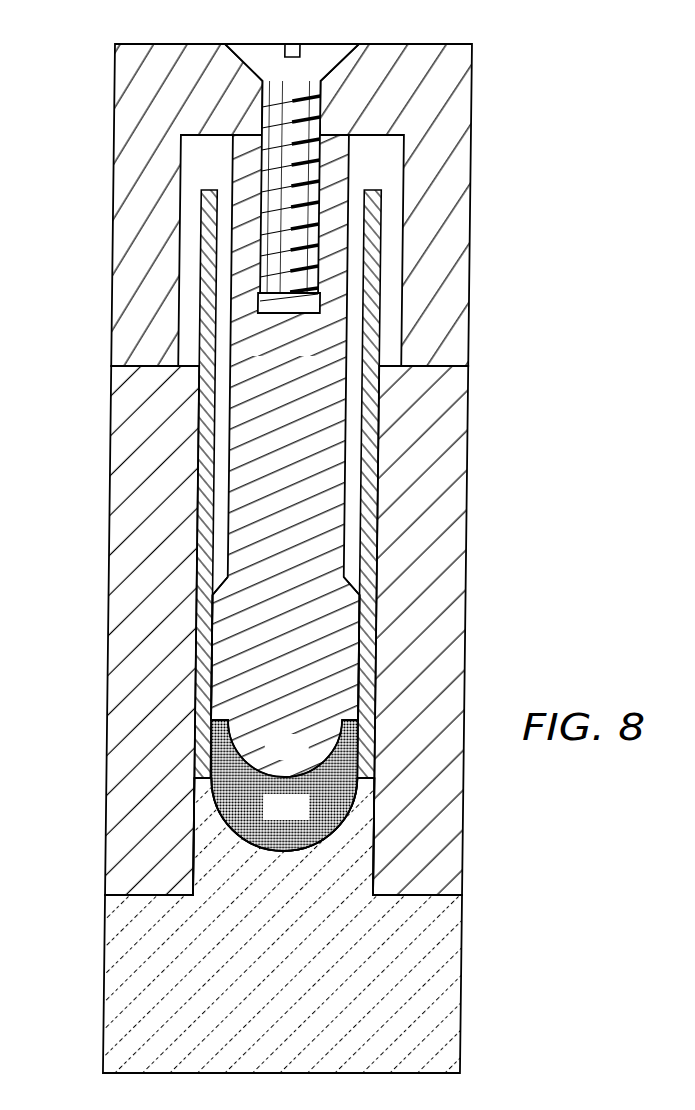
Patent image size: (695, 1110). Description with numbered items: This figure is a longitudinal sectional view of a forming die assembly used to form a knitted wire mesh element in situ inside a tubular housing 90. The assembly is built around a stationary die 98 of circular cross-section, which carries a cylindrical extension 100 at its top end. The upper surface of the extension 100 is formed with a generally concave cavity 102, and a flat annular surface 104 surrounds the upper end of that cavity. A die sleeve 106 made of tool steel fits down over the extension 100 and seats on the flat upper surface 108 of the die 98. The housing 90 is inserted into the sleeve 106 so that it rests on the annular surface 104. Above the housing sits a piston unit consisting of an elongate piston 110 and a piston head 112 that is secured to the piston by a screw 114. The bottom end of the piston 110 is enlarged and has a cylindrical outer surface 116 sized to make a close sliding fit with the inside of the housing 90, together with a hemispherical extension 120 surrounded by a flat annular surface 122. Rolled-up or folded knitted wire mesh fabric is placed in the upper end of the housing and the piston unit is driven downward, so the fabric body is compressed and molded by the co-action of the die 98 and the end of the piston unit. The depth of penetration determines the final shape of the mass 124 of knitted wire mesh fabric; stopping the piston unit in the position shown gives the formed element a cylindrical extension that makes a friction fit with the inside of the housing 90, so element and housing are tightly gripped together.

The housing 90 is at (377, 468).
The stationary die 98 is at (462, 966).
The cylindrical extension 100 is at (373, 863).
The concave cavity 102 is at (340, 845).
The flat annular surface 104 is at (363, 778).
The die sleeve 106 is at (468, 534).
The flat upper surface 108 is at (121, 893).
The piston 110 is at (333, 420).
The piston head 112 is at (446, 94).
The screw 114 is at (325, 55).
The cylindrical outer surface 116 is at (360, 650).
The hemispherical extension 120 is at (279, 757).
The flat annular surface 122 is at (215, 718).
The mass of knitted wire mesh fabric 124 is at (280, 817).